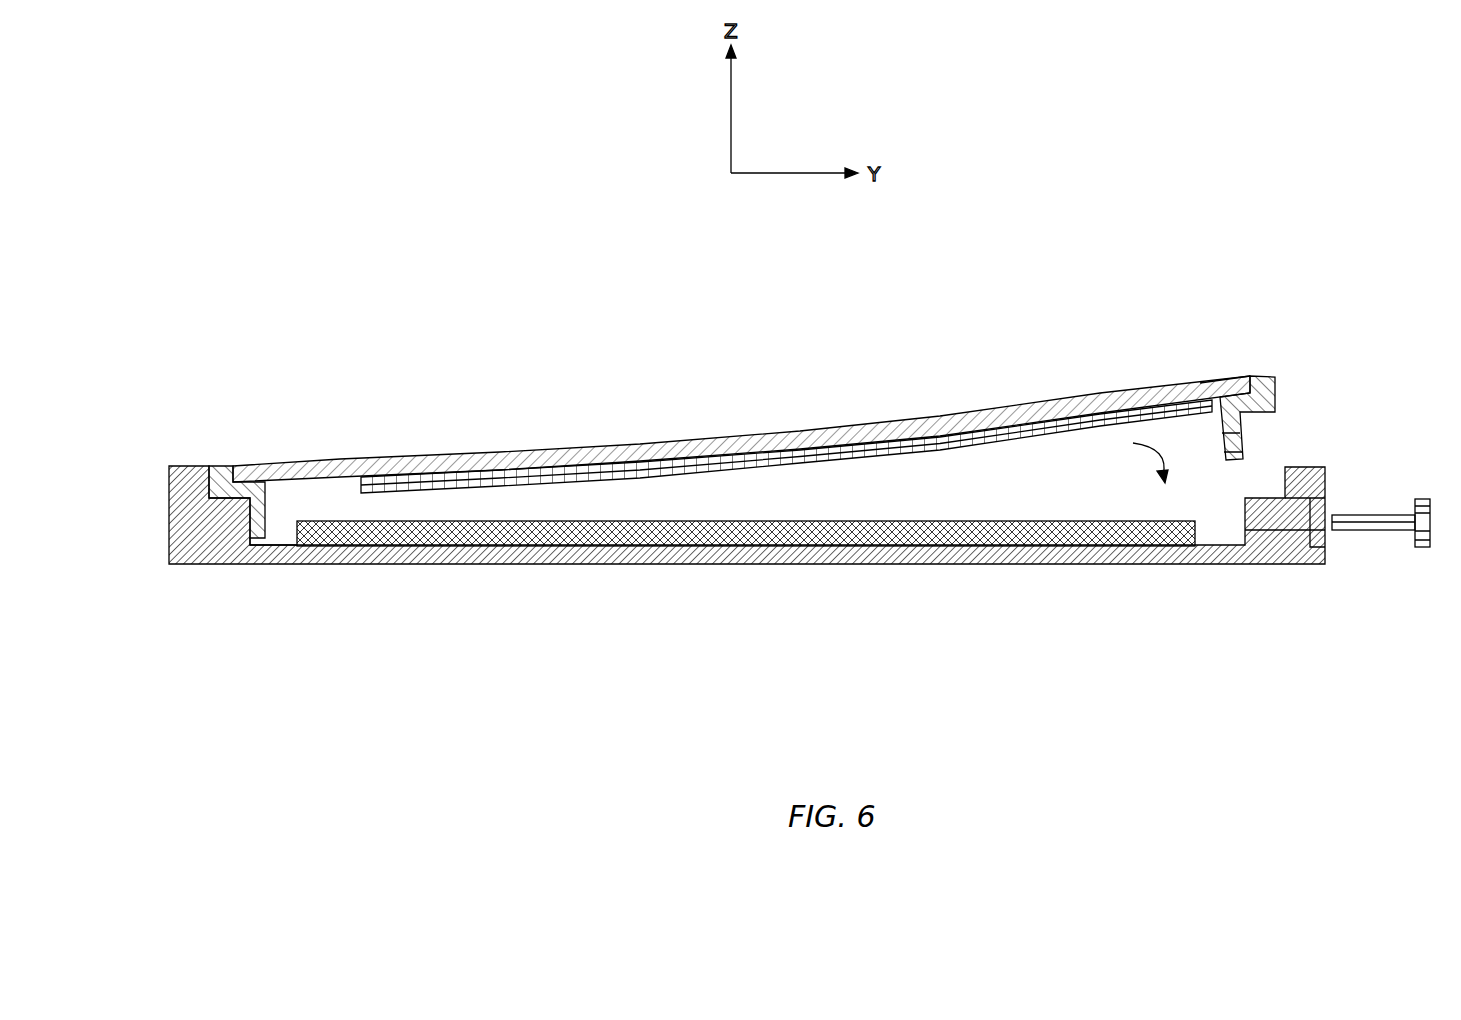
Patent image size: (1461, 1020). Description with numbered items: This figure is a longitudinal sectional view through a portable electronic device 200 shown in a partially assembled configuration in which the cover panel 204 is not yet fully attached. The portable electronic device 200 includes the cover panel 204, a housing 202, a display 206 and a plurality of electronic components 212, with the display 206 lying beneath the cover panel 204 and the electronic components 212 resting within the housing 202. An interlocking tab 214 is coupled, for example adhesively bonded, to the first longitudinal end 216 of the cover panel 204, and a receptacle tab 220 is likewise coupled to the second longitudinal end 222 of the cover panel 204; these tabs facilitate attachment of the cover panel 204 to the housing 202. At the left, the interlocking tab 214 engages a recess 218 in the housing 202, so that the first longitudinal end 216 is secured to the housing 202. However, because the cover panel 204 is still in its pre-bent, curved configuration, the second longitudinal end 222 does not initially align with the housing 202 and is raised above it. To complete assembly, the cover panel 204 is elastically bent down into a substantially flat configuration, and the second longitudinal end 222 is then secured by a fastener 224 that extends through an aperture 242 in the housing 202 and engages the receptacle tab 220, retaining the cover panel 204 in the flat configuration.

The portable electronic device 200 is at (387, 212).
The housing 202 is at (435, 564).
The cover panel 204 is at (597, 447).
The display 206 is at (965, 445).
The electronic components 212 is at (668, 520).
The interlocking tab 214 is at (218, 466).
The first longitudinal end 216 is at (242, 449).
The recess 218 is at (235, 525).
The receptacle tab 220 is at (1275, 390).
The second longitudinal end 222 is at (1230, 367).
The fastener 224 is at (1367, 513).
The aperture 242 is at (1282, 537).